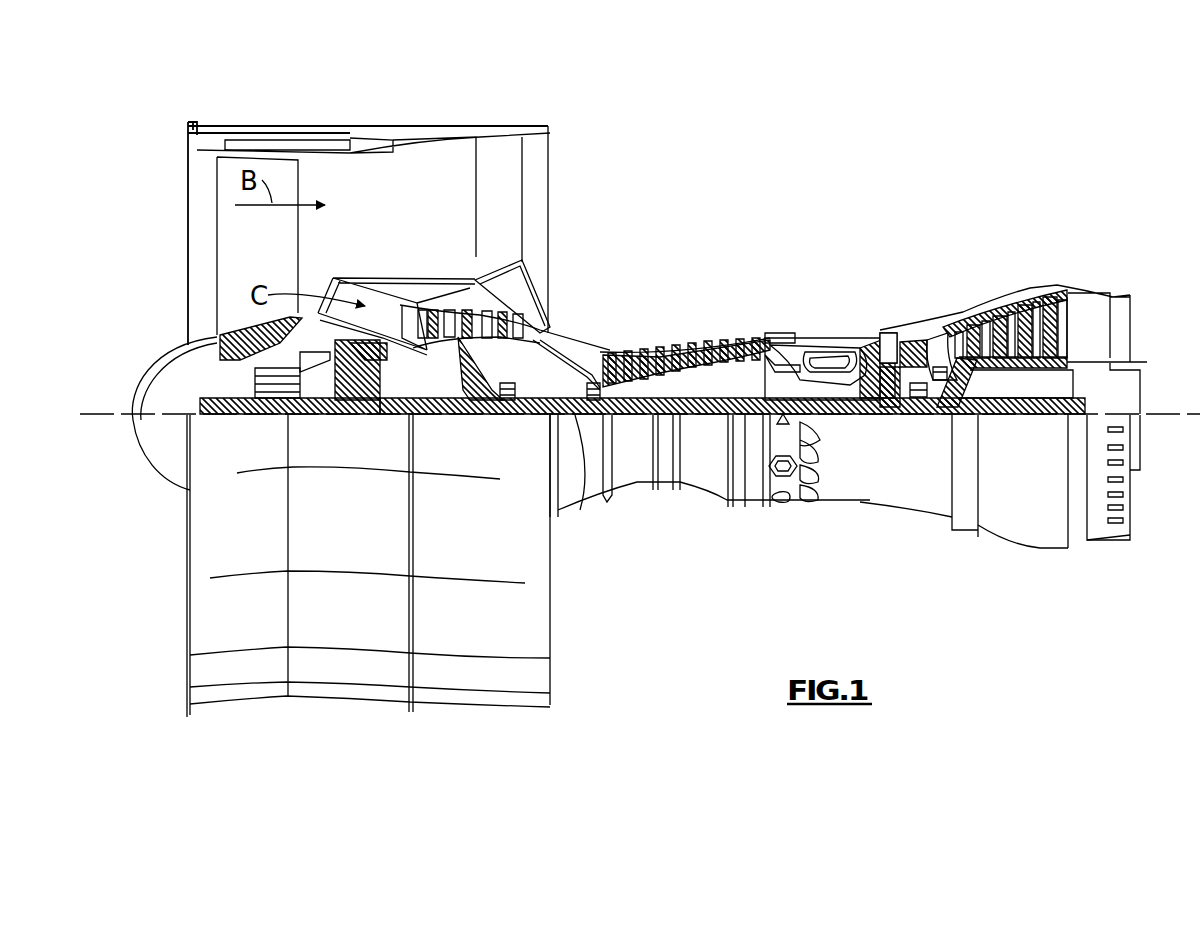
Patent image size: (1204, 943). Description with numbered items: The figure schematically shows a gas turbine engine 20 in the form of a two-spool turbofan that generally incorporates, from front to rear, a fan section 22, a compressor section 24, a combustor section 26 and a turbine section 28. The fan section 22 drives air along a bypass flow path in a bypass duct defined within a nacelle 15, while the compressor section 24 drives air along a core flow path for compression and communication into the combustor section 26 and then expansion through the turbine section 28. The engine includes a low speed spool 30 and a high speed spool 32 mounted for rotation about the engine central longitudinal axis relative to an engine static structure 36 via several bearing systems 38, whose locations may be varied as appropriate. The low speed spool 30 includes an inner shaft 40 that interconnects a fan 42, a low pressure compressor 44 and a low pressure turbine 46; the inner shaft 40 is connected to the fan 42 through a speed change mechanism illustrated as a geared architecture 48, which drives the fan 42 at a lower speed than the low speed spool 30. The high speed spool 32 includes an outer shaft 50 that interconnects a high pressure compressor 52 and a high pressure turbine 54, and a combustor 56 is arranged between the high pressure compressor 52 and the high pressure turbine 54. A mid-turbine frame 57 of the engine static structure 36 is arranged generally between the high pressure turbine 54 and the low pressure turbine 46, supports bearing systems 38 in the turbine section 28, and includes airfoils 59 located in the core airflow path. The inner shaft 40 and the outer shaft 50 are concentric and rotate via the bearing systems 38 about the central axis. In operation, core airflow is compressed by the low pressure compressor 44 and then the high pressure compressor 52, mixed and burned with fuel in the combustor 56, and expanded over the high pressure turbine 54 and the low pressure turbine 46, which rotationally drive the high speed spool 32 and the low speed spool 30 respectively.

The nacelle 15 is at (368, 140).
The gas turbine engine 20 is at (830, 178).
The fan section 22 is at (300, 118).
The compressor section 24 is at (605, 322).
The combustor section 26 is at (820, 305).
The turbine section 28 is at (968, 275).
The low speed spool 30 is at (707, 420).
The high speed spool 32 is at (750, 360).
The engine static structure 36 is at (748, 502).
The bearing systems 38 is at (505, 400).
The inner shaft 40 is at (575, 505).
The fan 42 is at (254, 246).
The low pressure compressor 44 is at (468, 330).
The low pressure turbine 46 is at (1018, 300).
The geared architecture 48 is at (378, 398).
The outer shaft 50 is at (820, 400).
The high pressure compressor 52 is at (690, 380).
The high pressure turbine 54 is at (890, 333).
The combustor 56 is at (830, 355).
The mid-turbine frame 57 is at (934, 316).
The airfoils 59 is at (960, 365).